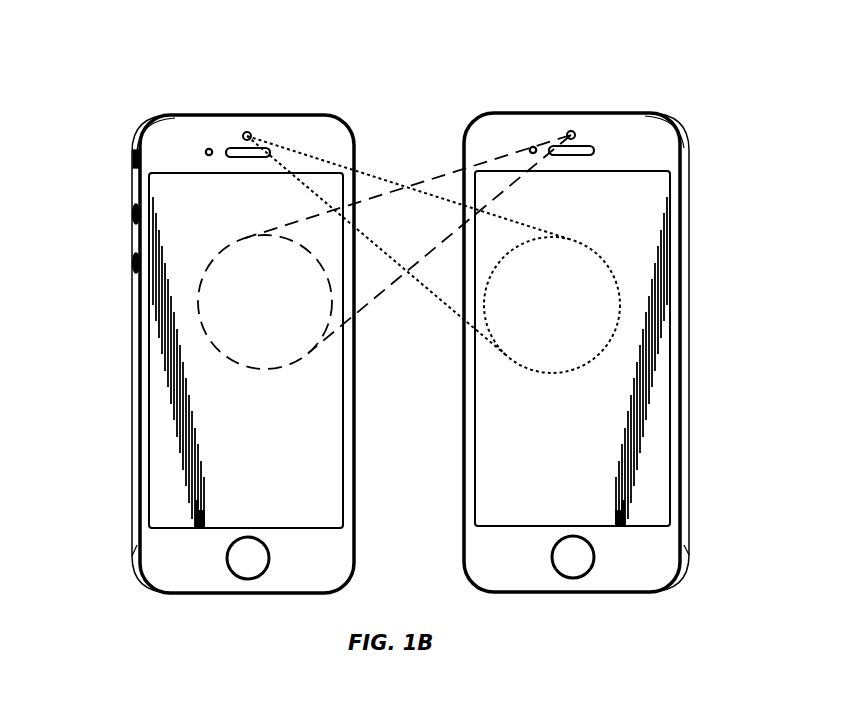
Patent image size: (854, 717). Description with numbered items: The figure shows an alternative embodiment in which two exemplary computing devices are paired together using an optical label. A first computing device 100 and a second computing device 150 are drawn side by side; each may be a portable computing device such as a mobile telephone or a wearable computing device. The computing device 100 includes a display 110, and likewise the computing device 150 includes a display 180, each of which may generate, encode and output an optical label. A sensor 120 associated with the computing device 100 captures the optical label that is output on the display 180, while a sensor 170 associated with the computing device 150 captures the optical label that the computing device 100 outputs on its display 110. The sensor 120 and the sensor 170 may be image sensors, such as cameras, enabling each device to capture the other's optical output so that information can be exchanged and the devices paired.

The computing device 100 is at (158, 117).
The display 110 is at (165, 415).
The sensor 120 is at (247, 131).
The computing device 150 is at (660, 113).
The sensor 170 is at (571, 131).
The display 180 is at (657, 423).